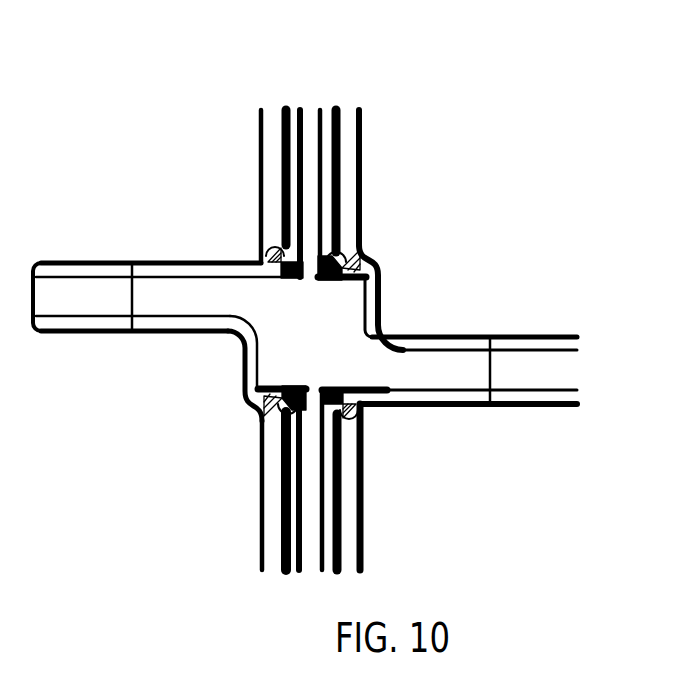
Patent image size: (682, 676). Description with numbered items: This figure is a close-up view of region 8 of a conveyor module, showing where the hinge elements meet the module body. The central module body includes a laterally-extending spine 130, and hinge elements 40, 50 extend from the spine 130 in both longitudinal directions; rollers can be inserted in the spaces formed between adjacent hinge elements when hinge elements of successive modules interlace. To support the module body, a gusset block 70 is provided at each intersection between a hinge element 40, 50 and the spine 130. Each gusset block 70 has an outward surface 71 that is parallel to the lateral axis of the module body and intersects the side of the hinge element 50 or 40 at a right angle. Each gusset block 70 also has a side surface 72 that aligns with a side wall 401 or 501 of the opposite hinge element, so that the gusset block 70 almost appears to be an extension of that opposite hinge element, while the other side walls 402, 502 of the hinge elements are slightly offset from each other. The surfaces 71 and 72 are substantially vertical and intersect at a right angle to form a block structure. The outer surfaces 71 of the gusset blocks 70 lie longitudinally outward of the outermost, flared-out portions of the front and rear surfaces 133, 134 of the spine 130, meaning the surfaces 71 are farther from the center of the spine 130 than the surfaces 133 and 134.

The region 8 is at (450, 146).
The spine 130 is at (347, 135).
The front surface of the spine 133 is at (363, 528).
The rear surface of the spine 134 is at (261, 528).
The hinge element 40 is at (95, 290).
The side wall of hinge element 401 is at (161, 262).
The side wall of hinge element 402 is at (83, 331).
The hinge element 50 is at (457, 372).
The side wall of hinge element 501 is at (481, 407).
The side wall of hinge element 502 is at (541, 334).
The gusset block 70 is at (342, 303).
The outward surface 71 is at (387, 307).
The side surface 72 is at (324, 276).